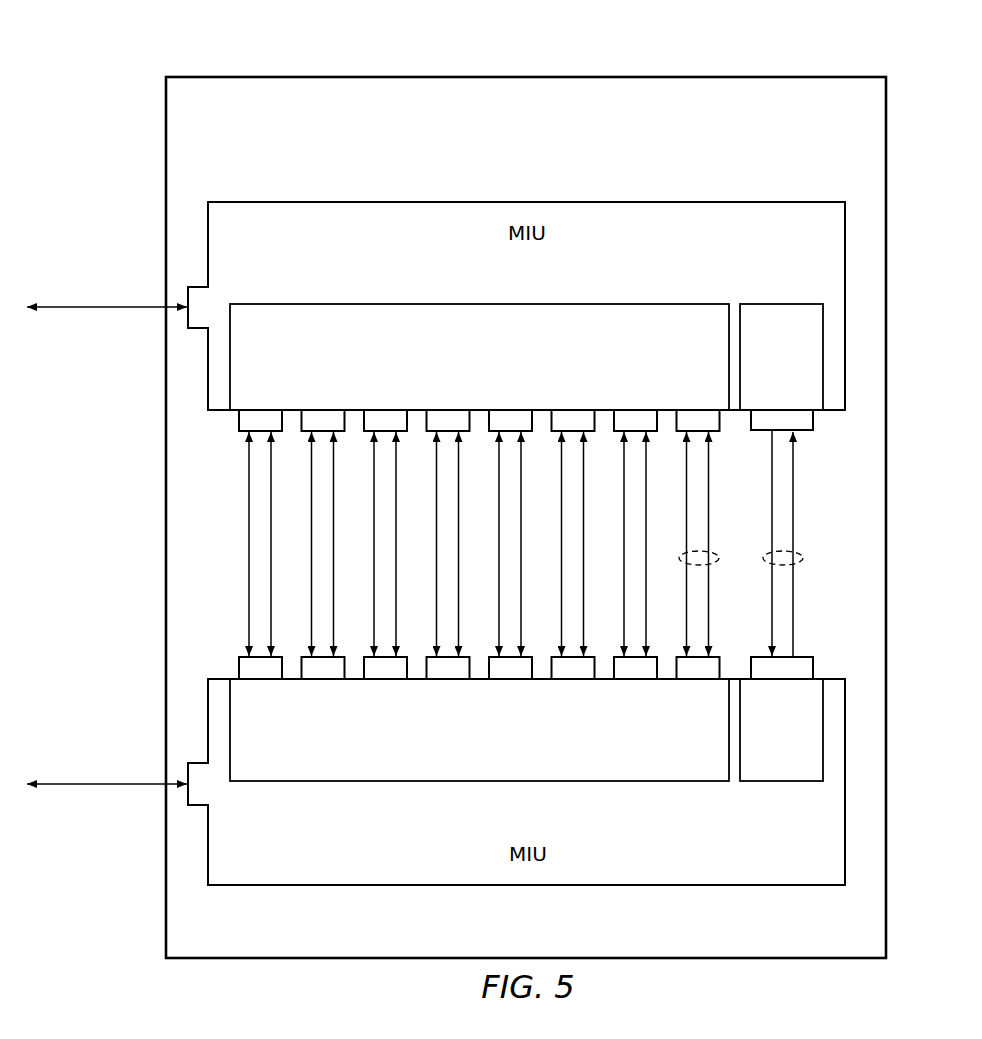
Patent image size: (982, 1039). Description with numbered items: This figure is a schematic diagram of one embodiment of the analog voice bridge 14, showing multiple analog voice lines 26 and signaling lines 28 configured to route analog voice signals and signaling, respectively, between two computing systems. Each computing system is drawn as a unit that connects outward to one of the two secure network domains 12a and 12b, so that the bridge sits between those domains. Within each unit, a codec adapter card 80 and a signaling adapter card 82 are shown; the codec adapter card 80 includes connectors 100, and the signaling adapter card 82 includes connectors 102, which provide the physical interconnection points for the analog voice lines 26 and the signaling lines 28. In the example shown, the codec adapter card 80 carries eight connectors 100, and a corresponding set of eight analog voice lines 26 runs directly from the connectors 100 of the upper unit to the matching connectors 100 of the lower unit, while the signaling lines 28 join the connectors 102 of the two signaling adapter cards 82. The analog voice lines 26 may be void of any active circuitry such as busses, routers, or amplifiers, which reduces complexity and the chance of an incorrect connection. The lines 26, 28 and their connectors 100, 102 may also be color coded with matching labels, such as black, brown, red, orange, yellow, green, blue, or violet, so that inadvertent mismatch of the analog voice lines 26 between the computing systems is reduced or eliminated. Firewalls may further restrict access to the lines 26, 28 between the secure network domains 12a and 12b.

The analog voice bridge 14 is at (298, 75).
The secure network domain 12a is at (107, 266).
The secure network domain 12b is at (107, 743).
The codec adapter card 80 is at (617, 298).
The signaling adapter card 82 is at (794, 298).
The connectors 100 is at (274, 408).
The connectors 102 is at (816, 421).
The analog voice lines 26 is at (270, 545).
The signaling lines 28 is at (803, 556).